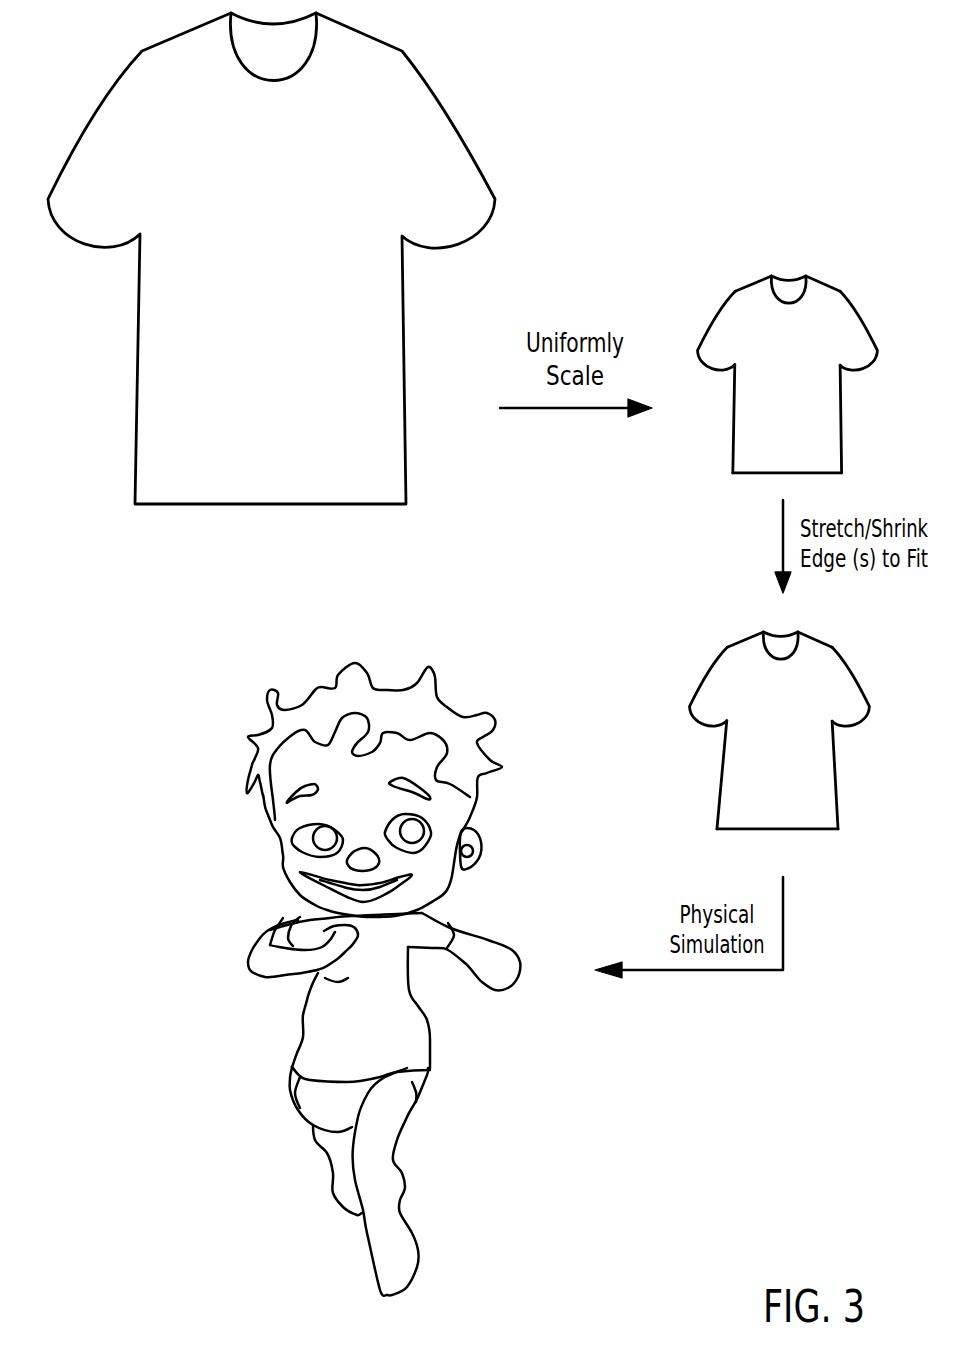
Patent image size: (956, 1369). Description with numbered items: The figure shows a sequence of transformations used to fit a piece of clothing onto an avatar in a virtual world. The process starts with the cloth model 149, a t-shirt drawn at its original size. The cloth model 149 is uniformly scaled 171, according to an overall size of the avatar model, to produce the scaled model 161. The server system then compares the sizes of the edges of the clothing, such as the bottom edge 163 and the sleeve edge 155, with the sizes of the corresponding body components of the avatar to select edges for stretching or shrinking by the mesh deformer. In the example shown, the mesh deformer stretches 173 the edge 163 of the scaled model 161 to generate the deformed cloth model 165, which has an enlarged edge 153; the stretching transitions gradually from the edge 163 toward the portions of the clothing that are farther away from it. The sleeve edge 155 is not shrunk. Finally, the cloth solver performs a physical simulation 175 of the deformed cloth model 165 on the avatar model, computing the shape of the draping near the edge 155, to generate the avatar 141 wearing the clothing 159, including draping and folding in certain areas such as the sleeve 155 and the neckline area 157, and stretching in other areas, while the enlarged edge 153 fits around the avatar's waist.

The avatar 141 is at (490, 937).
The cloth model 149 is at (404, 345).
The edge 153 is at (797, 830).
The edge 155 is at (878, 360).
The area of draping or folding 157 is at (343, 981).
The clothing 159 is at (430, 1027).
The scaled model 161 is at (842, 420).
The edge 163 is at (752, 473).
The deformed cloth model 165 is at (836, 780).
The uniform scaling 171 is at (560, 408).
The stretching 173 is at (783, 552).
The physical simulation 175 is at (783, 943).